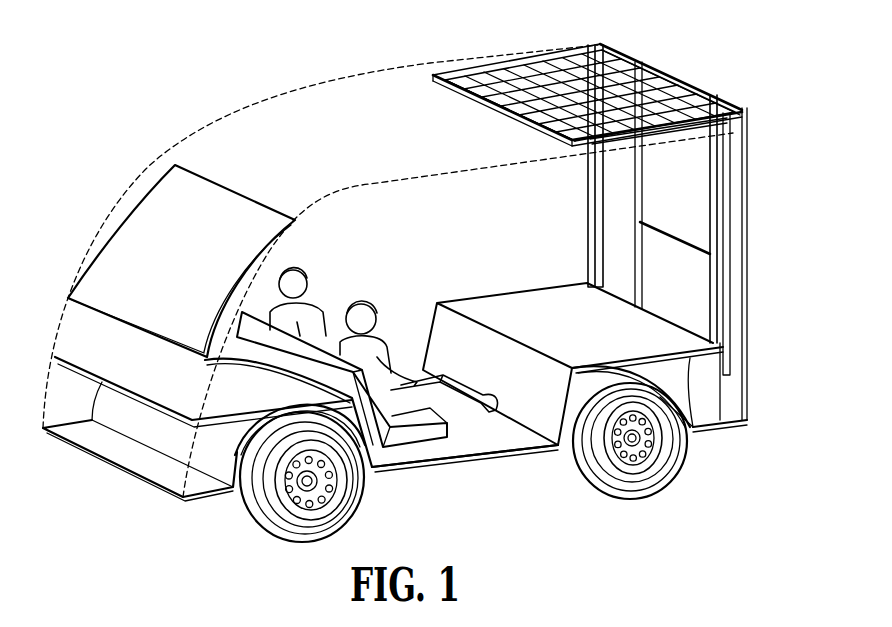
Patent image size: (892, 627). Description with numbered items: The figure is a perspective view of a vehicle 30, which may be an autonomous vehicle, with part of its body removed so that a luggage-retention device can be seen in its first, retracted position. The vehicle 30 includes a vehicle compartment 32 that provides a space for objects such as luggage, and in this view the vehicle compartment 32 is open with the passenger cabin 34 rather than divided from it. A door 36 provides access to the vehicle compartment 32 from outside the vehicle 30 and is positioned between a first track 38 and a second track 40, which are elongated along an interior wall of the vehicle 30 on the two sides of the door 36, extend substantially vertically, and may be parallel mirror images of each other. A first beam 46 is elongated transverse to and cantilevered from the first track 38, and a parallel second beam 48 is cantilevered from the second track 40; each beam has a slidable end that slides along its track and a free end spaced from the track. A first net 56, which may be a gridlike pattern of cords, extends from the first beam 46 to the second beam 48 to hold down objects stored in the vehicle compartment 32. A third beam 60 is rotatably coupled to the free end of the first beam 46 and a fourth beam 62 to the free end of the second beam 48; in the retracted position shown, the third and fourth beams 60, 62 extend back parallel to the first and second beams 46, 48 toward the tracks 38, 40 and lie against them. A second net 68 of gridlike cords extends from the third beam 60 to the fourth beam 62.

The vehicle 30 is at (138, 151).
The vehicle compartment 32 is at (731, 423).
The passenger cabin 34 is at (500, 458).
The door 36 is at (718, 185).
The first track 38 is at (587, 205).
The second track 40 is at (738, 262).
The first beam 46 is at (531, 62).
The second beam 48 is at (670, 137).
The first net 56 is at (664, 88).
The third beam 60 is at (478, 98).
The fourth beam 62 is at (616, 140).
The second net 68 is at (510, 116).